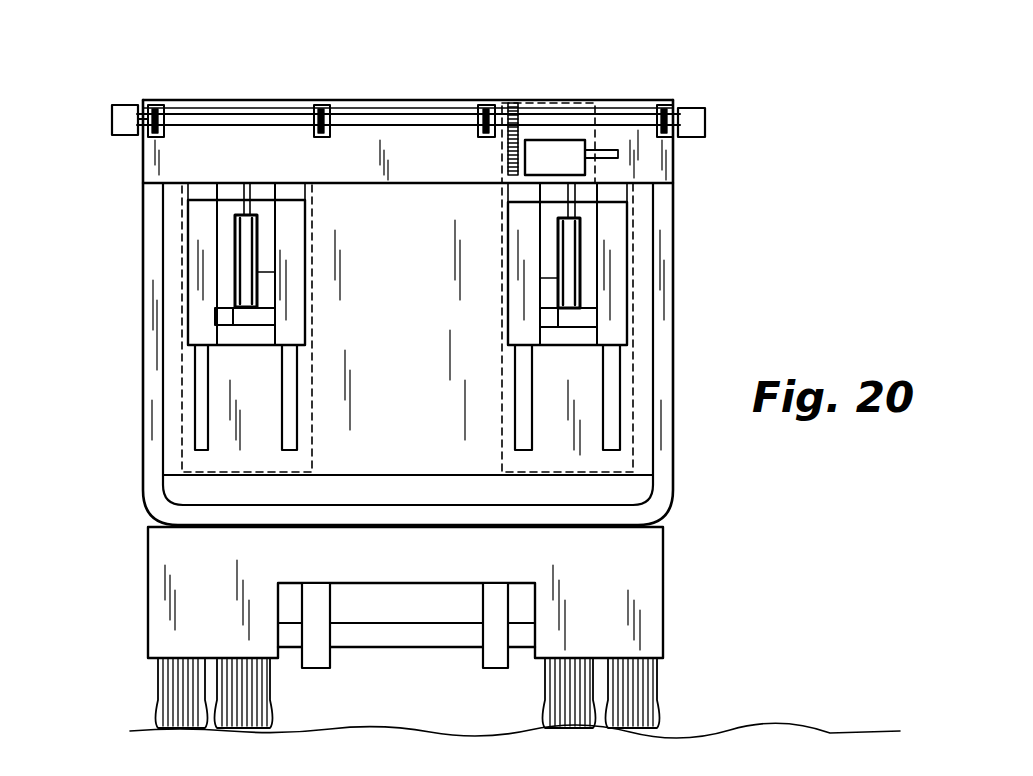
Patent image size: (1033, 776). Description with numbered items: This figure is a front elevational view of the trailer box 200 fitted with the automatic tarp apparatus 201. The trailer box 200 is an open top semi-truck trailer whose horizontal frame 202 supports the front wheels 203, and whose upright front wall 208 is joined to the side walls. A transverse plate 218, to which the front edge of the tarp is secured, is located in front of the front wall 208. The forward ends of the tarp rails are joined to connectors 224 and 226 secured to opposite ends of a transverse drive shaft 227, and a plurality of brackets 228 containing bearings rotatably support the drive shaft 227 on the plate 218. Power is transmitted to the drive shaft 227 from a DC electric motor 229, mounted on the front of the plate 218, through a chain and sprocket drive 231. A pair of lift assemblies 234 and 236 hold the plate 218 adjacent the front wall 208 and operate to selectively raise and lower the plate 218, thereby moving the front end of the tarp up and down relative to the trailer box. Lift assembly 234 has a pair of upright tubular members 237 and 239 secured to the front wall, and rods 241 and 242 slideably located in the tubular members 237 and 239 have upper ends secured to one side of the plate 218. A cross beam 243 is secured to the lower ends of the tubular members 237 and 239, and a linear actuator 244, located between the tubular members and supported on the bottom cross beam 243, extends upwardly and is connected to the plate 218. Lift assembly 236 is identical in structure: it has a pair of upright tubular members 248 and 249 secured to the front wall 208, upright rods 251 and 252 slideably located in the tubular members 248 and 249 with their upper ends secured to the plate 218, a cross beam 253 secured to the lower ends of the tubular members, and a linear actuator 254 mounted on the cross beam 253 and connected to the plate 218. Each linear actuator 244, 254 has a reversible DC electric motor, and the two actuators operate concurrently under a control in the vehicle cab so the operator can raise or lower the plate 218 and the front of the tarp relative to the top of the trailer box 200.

The trailer box 200 is at (690, 248).
The automatic tarp apparatus 201 is at (446, 78).
The horizontal frame 202 is at (313, 656).
The front wheels 203 is at (185, 690).
The front wall 208 is at (432, 409).
The transverse plate 218 is at (675, 152).
The connector 224 is at (112, 118).
The connector 226 is at (700, 109).
The transverse drive shaft 227 is at (353, 120).
The brackets 228 is at (325, 104).
The DC electric motor 229 is at (582, 171).
The chain and sprocket drive 231 is at (506, 150).
The lift assembly 234 is at (200, 322).
The lift assembly 236 is at (618, 286).
The upright tubular member 237 is at (196, 222).
The upright tubular member 239 is at (292, 214).
The rod 241 is at (200, 410).
The rod 242 is at (288, 360).
The cross beam 243 is at (258, 318).
The linear actuator 244 is at (222, 326).
The upright tubular member 248 is at (526, 222).
The upright tubular member 249 is at (612, 215).
The upright rod 251 is at (526, 438).
The upright rod 252 is at (612, 438).
The cross beam 253 is at (580, 322).
The linear actuator 254 is at (546, 322).